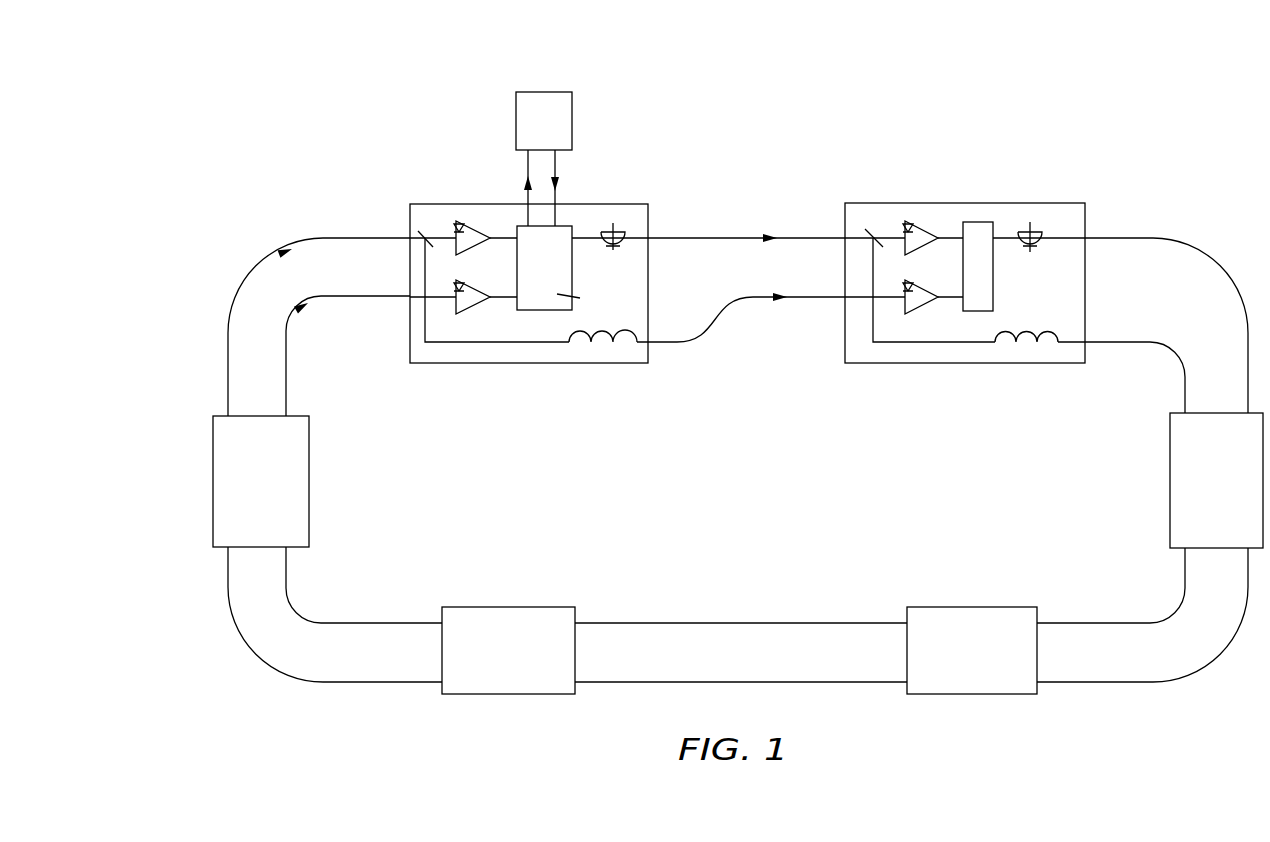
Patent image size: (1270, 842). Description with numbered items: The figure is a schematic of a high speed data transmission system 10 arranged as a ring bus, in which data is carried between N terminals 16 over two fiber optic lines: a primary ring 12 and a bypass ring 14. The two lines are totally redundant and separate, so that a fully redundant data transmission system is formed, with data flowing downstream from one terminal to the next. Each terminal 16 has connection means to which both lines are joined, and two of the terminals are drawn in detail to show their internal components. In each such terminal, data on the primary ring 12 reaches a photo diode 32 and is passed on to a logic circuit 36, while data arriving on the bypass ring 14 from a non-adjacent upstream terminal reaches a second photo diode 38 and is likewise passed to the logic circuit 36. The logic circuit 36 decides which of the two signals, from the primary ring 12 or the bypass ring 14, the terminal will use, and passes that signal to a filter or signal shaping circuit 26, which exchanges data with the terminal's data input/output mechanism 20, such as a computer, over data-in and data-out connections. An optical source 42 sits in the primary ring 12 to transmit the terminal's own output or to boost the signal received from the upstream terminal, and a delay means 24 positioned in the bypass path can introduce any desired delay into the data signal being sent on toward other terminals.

The high speed data transmission system 10 is at (1090, 141).
The primary ring 12 is at (254, 277).
The bypass ring 14 is at (287, 347).
The terminal 16 is at (465, 375).
The data input/output mechanism 20 is at (559, 125).
The delay means 24 is at (613, 341).
The filter or signal shaping circuits 26 is at (563, 262).
The photo diode 32 is at (465, 225).
The logic circuit 36 is at (755, 266).
The photo diode 38 is at (470, 306).
The optical source 42 is at (620, 236).